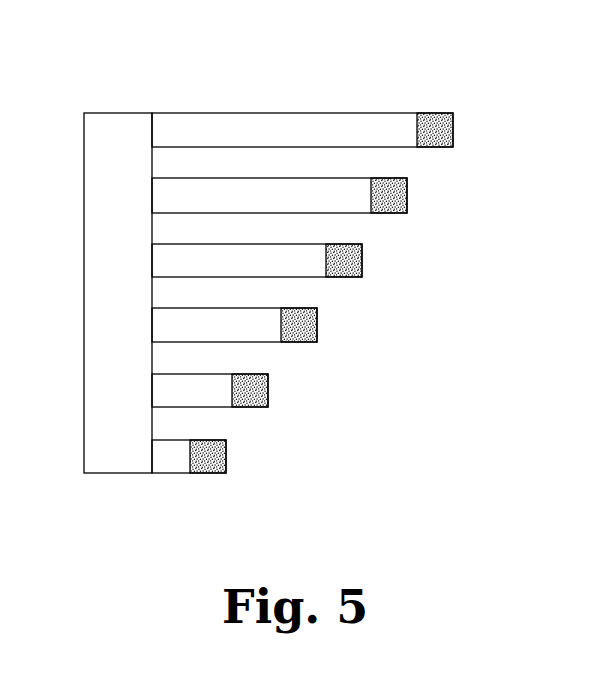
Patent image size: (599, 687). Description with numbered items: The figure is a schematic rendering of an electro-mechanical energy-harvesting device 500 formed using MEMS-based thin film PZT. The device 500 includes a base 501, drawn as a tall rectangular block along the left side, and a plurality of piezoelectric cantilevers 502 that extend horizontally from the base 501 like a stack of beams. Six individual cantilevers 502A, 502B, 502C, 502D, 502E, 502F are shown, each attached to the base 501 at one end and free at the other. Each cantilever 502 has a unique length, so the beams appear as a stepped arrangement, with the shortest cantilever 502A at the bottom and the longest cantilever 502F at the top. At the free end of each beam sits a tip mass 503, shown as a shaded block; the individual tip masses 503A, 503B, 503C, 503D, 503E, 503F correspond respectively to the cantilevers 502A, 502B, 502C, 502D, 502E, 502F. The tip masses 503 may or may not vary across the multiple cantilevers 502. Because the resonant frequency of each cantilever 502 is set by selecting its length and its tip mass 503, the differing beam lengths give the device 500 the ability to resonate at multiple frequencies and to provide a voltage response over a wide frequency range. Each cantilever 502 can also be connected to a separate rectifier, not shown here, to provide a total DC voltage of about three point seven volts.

The electro-mechanical energy-harvesting device 500 is at (469, 51).
The base 501 is at (84, 285).
The piezoelectric cantilevers 502 is at (241, 111).
The piezoelectric cantilever 502A is at (165, 473).
The piezoelectric cantilever 502B is at (207, 407).
The piezoelectric cantilever 502C is at (256, 342).
The piezoelectric cantilever 502D is at (301, 277).
The piezoelectric cantilever 502E is at (346, 213).
The piezoelectric cantilever 502F is at (392, 147).
The tip mass 503 is at (432, 111).
The tip mass 503A is at (226, 457).
The tip mass 503B is at (268, 391).
The tip mass 503C is at (317, 325).
The tip mass 503D is at (362, 261).
The tip mass 503E is at (407, 195).
The tip mass 503F is at (453, 130).